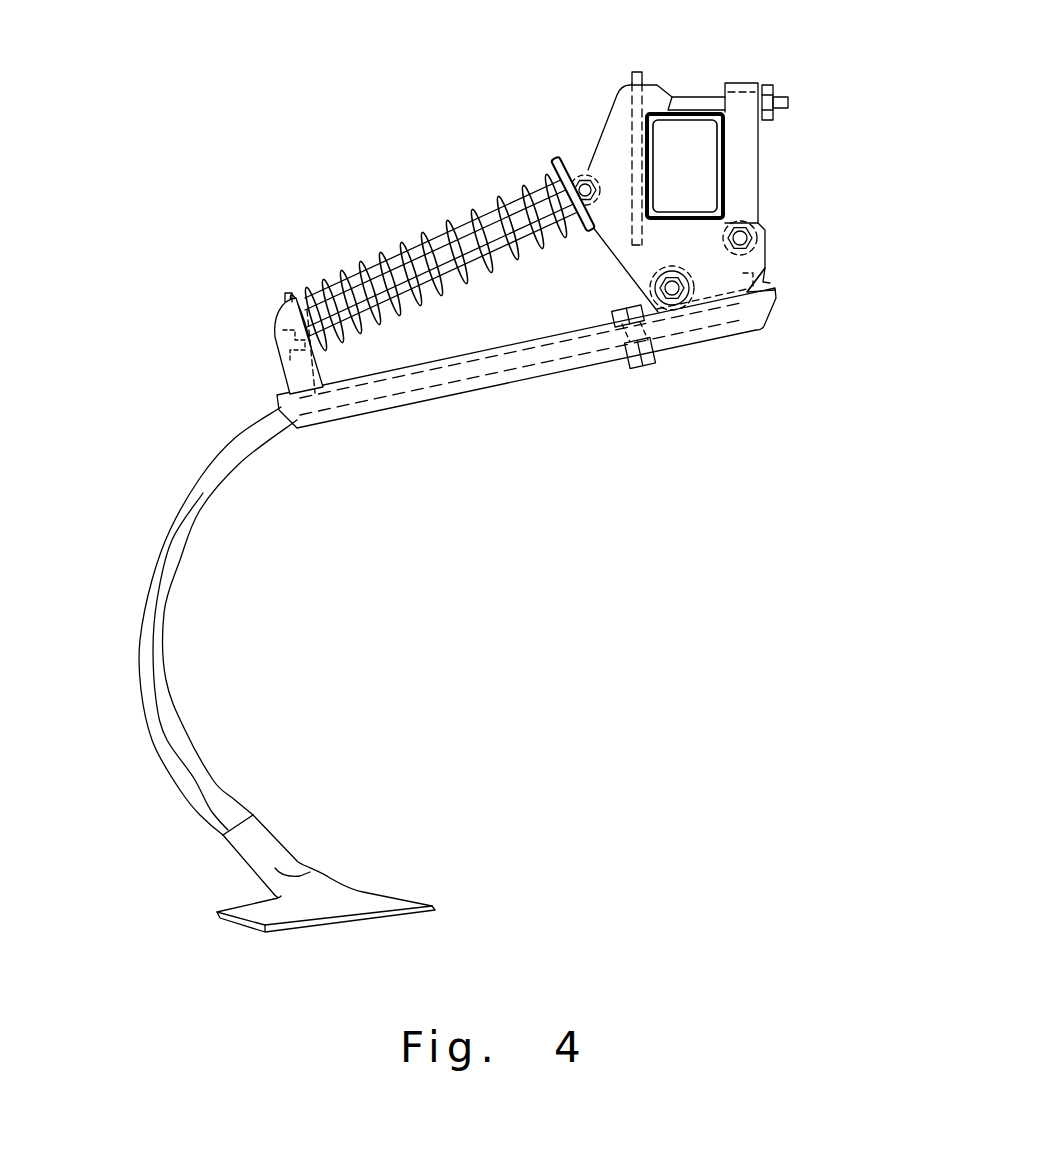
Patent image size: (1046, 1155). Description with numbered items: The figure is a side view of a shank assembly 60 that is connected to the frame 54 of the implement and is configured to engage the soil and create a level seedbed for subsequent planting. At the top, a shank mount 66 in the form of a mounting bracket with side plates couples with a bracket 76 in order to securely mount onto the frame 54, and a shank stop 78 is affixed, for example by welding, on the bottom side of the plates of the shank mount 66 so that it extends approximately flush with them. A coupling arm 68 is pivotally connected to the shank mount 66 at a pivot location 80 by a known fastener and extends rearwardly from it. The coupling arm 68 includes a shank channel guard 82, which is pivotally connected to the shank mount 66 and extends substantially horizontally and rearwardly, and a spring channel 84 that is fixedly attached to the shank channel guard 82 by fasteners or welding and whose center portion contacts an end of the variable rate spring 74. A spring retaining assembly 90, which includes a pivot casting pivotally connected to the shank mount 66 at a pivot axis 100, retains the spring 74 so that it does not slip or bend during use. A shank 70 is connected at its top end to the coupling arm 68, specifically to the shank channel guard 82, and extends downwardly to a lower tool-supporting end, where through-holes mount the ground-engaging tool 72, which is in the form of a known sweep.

The frame 54 is at (695, 117).
The shank assembly 60 is at (458, 502).
The shank mount 66 is at (700, 255).
The coupling arm 68 is at (480, 405).
The shank 70 is at (147, 588).
The ground-engaging tool 72 is at (322, 918).
The variable rate spring 74 is at (357, 267).
The bracket 76 is at (750, 140).
The shank stop 78 is at (768, 275).
The pivot location 80 is at (683, 297).
The shank channel guard 82 is at (500, 373).
The spring channel 84 is at (297, 370).
The spring retaining assembly 90 is at (441, 243).
The pivot axis 100 is at (583, 177).